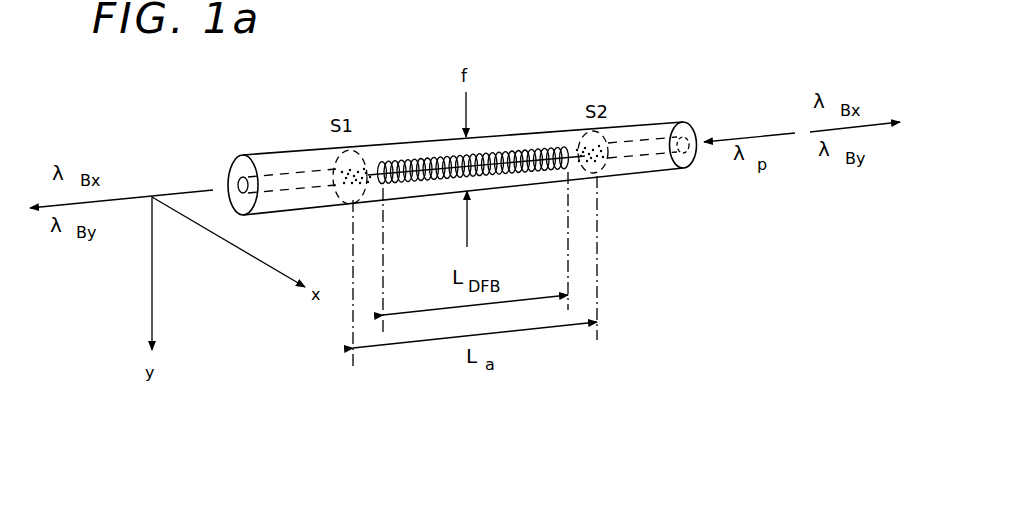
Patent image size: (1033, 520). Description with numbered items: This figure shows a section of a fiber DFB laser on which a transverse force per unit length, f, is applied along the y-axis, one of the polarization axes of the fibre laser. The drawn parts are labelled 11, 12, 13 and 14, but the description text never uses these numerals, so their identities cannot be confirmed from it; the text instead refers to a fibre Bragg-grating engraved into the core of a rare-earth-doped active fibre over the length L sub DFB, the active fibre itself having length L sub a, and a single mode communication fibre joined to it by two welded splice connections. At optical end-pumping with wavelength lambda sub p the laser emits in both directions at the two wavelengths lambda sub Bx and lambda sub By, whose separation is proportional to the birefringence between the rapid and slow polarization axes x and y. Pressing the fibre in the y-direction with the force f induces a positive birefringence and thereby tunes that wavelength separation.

The DFB grating section 11 is at (513, 150).
The splice S2 12 is at (575, 143).
The optical fiber 13 is at (289, 170).
The doped amplifier fiber section 14 is at (463, 150).